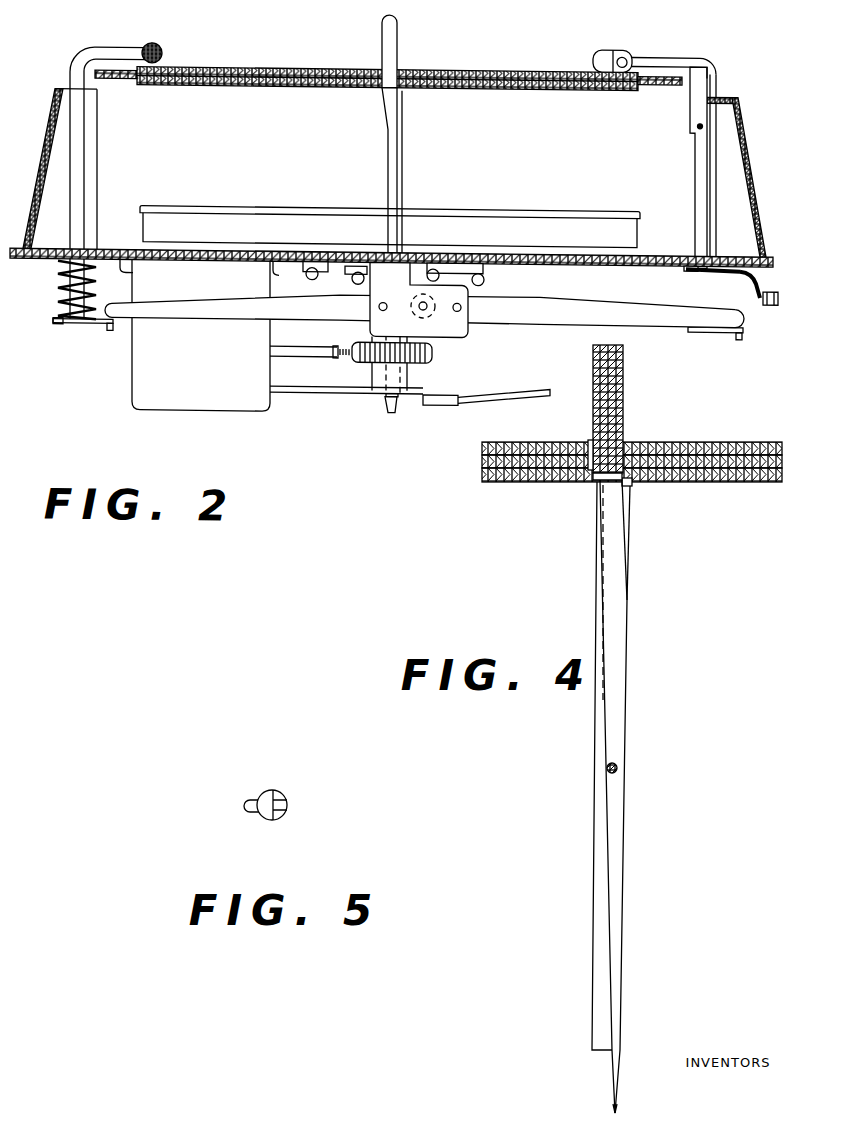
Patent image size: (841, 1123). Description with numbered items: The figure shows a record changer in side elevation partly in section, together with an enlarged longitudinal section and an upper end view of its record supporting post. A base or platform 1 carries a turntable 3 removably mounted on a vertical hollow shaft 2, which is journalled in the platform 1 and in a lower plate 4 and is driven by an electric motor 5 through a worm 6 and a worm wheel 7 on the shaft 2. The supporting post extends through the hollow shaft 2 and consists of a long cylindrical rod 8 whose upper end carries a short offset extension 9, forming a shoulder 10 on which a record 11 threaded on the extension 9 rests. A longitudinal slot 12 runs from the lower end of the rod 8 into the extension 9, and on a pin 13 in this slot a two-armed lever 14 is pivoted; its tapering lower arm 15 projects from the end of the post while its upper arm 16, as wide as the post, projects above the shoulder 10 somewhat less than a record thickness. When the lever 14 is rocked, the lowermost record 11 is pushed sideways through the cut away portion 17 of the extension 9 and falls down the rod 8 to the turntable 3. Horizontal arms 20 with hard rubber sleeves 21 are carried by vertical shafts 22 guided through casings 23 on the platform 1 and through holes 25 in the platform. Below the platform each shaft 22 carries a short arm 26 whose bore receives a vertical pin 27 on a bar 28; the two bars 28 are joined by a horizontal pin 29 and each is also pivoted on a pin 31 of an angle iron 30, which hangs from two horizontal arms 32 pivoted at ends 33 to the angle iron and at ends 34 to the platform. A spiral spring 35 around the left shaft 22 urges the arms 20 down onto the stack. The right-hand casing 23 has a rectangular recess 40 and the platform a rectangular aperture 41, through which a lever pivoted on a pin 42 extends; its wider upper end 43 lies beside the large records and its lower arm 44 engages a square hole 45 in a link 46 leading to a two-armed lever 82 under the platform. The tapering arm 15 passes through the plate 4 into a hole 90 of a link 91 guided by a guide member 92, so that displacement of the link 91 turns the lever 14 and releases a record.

In FIG. 2, the base or platform 1 is at (198, 246).
In FIG. 2, the vertical hollow shaft 2 is at (405, 372).
In FIG. 2, the turntable 3 is at (576, 221).
In FIG. 2, the lower support or plate 4 is at (355, 389).
In FIG. 2, the electric motor 5 is at (203, 397).
In FIG. 2, the worm 6 is at (333, 353).
In FIG. 2, the worm wheel 7 is at (420, 350).
In FIG. 2, the cylindrical rod 8 is at (398, 113).
In FIG. 4, the cylindrical rod 8 is at (631, 580).
In FIG. 5, the cylindrical rod 8 is at (283, 791).
In FIG. 2, the extension 9 is at (383, 49).
In FIG. 4, the extension 9 is at (600, 373).
In FIG. 5, the extension 9 is at (259, 811).
In FIG. 4, the shoulder or flat 10 is at (629, 485).
In FIG. 2, the record 11 is at (525, 83).
In FIG. 4, the record 11 is at (713, 474).
In FIG. 4, the longitudinal slot 12 is at (600, 1026).
In FIG. 5, the longitudinal slot 12 is at (284, 812).
In FIG. 4, the pin 13 is at (606, 769).
In FIG. 4, the two-armed lever 14 is at (626, 652).
In FIG. 2, the tapering lower arm 15 is at (397, 406).
In FIG. 4, the tapering lower arm 15 is at (617, 1110).
In FIG. 4, the upper arm 16 is at (597, 483).
In FIG. 4, the cut away portion 17 is at (592, 470).
In FIG. 2, the arms 20 is at (114, 48).
In FIG. 2, the hard rubber sleeves 21 is at (163, 46).
In FIG. 2, the vertical shaft 22 is at (77, 167).
In FIG. 2, the casings or uprights 23 is at (51, 113).
In FIG. 2, the hole 25 is at (58, 263).
In FIG. 2, the short horizontal arm 26 is at (91, 325).
In FIG. 2, the vertical pin 27 is at (111, 330).
In FIG. 2, the bar 28 is at (245, 312).
In FIG. 2, the horizontal pin 29 is at (426, 293).
In FIG. 2, the angle iron 30 is at (465, 319).
In FIG. 2, the horizontal pin 31 is at (386, 298).
In FIG. 2, the horizontal arms 32 is at (330, 262).
In FIG. 2, the ends 33 is at (356, 268).
In FIG. 2, the ends 34 is at (307, 264).
In FIG. 2, the cylindrical spiral spring 35 is at (56, 325).
In FIG. 2, the rectangular recess 40 is at (718, 91).
In FIG. 2, the rectangular aperture 41 is at (688, 250).
In FIG. 2, the horizontal pin 42 is at (697, 118).
In FIG. 2, the upper end of lever 43 is at (708, 59).
In FIG. 2, the lower arm of lever 44 is at (714, 258).
In FIG. 2, the square hole 45 is at (684, 262).
In FIG. 2, the link 46 is at (750, 278).
In FIG. 2, the two-armed lever 82 is at (775, 297).
In FIG. 2, the hole 90 is at (391, 400).
In FIG. 2, the link 91 is at (549, 391).
In FIG. 2, the guide member 92 is at (443, 400).